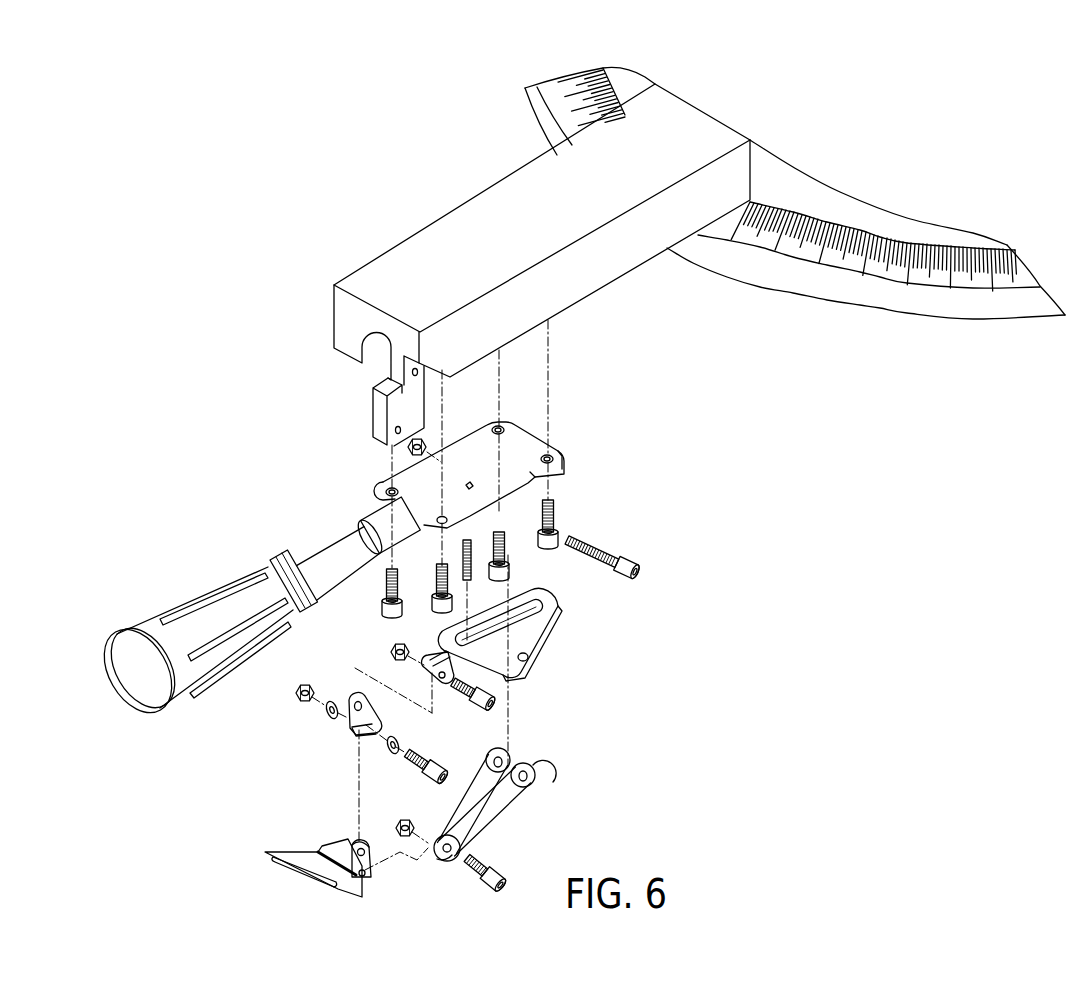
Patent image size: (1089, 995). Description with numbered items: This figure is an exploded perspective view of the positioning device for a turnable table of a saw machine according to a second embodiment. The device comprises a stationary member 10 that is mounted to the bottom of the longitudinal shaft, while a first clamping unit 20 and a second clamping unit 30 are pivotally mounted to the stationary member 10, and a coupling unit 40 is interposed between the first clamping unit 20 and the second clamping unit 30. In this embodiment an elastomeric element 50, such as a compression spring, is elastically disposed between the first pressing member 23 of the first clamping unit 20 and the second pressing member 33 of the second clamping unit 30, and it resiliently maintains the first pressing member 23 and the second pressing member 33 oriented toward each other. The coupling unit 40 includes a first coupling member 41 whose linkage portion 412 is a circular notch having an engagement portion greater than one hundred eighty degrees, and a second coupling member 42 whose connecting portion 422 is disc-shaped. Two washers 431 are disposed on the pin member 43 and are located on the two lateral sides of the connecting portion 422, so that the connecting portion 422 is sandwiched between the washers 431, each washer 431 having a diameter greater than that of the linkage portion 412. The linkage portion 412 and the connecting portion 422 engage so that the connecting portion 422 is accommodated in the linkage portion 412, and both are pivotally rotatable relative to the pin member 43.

The stationary member 10 is at (535, 437).
The first clamping unit 20 is at (566, 607).
The first pressing member 23 is at (438, 636).
The second clamping unit 30 is at (560, 769).
The second pressing member 33 is at (470, 846).
The coupling unit 40 is at (311, 884).
The first coupling member 41 is at (350, 722).
The second coupling member 42 is at (355, 846).
The pin member 43 is at (428, 752).
The elastomeric element 50 is at (478, 584).
The linkage portion 412 is at (358, 728).
The connecting portion 422 is at (358, 838).
The washer 431 is at (327, 712).